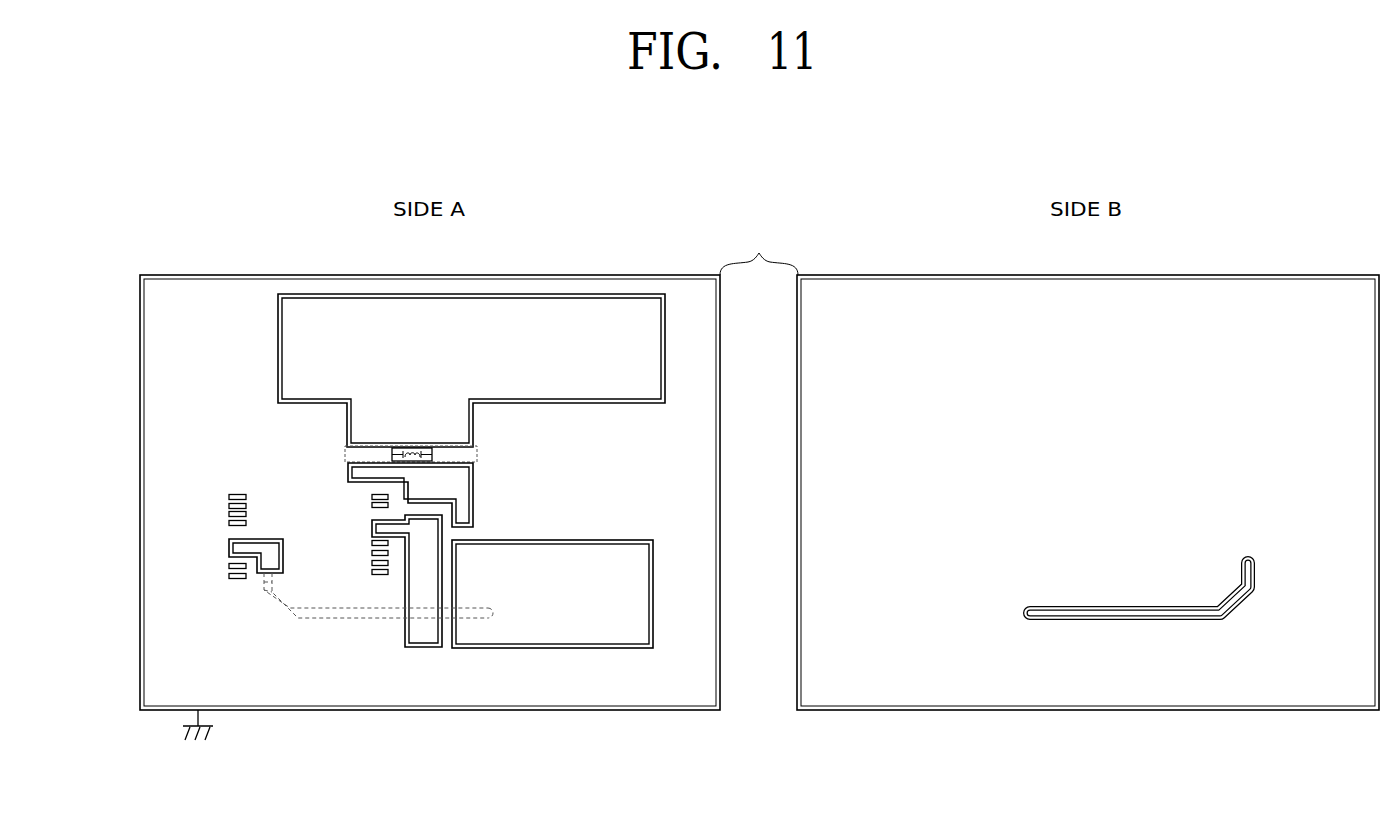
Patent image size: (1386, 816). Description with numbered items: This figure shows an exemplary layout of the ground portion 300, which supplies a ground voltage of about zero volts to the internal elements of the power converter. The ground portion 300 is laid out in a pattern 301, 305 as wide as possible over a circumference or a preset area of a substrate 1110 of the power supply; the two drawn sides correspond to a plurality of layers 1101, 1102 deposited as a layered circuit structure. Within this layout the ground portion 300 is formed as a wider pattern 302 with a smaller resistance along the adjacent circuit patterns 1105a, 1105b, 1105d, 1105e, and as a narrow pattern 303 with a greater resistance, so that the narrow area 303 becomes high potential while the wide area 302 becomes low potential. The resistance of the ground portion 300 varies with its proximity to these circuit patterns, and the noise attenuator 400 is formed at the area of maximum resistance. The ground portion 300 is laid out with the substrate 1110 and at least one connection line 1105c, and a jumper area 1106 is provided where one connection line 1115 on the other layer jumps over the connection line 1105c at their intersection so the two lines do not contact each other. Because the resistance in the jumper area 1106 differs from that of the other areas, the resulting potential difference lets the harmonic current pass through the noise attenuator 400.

The ground portion 300 is at (893, 182).
The pattern 301 is at (708, 677).
The wider pattern 302 is at (711, 445).
The narrow pattern 303 is at (378, 445).
The pattern 305 is at (1292, 700).
The noise attenuator 400 is at (412, 452).
The layer 1101 is at (595, 710).
The layer 1102 is at (1180, 710).
The circuit pattern 1105a is at (545, 296).
The circuit pattern 1105b is at (473, 490).
The connection line 1105c is at (423, 647).
The circuit pattern 1105d is at (653, 593).
The circuit pattern 1105e is at (229, 548).
The jumper area 1106 is at (332, 615).
The substrate 1110 is at (759, 250).
The connection line 1115 is at (1102, 613).